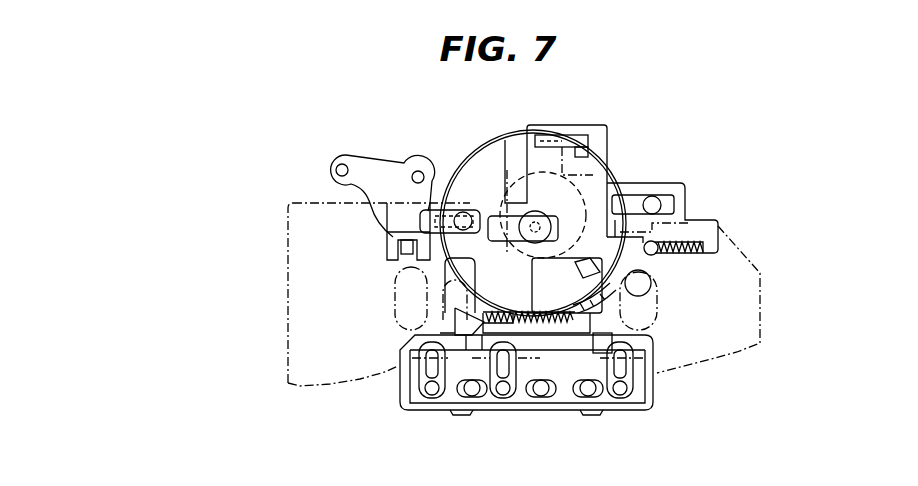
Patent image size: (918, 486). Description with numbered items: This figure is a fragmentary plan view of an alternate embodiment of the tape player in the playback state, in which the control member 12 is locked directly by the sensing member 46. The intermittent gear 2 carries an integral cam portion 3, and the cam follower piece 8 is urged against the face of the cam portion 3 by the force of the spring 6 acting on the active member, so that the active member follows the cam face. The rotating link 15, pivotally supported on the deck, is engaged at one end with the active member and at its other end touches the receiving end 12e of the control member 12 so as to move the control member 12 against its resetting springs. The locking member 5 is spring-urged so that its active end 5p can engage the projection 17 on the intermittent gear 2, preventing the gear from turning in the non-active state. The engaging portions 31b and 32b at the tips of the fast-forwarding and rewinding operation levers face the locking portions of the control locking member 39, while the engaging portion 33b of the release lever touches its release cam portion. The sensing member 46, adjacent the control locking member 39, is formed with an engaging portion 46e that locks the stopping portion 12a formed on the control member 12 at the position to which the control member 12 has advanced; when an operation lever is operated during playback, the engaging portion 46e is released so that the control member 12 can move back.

The intermittent gear 2 is at (503, 140).
The cam portion 3 is at (600, 172).
The locking member 5 is at (617, 242).
The active end 5p is at (598, 243).
The spring 6 is at (698, 252).
The cam follower piece 8 is at (574, 238).
The control member 12 is at (293, 292).
The stopping portion 12a is at (458, 343).
The receiving end 12e is at (312, 206).
The rotating link 15 is at (383, 172).
The projection 17 is at (605, 300).
The engaging portion 31b is at (620, 398).
The engaging portion 32b is at (433, 398).
The engaging portion 33b is at (503, 398).
The control locking member 39 is at (535, 405).
The sensing member 46 is at (400, 378).
The engaging portion 46e is at (467, 305).